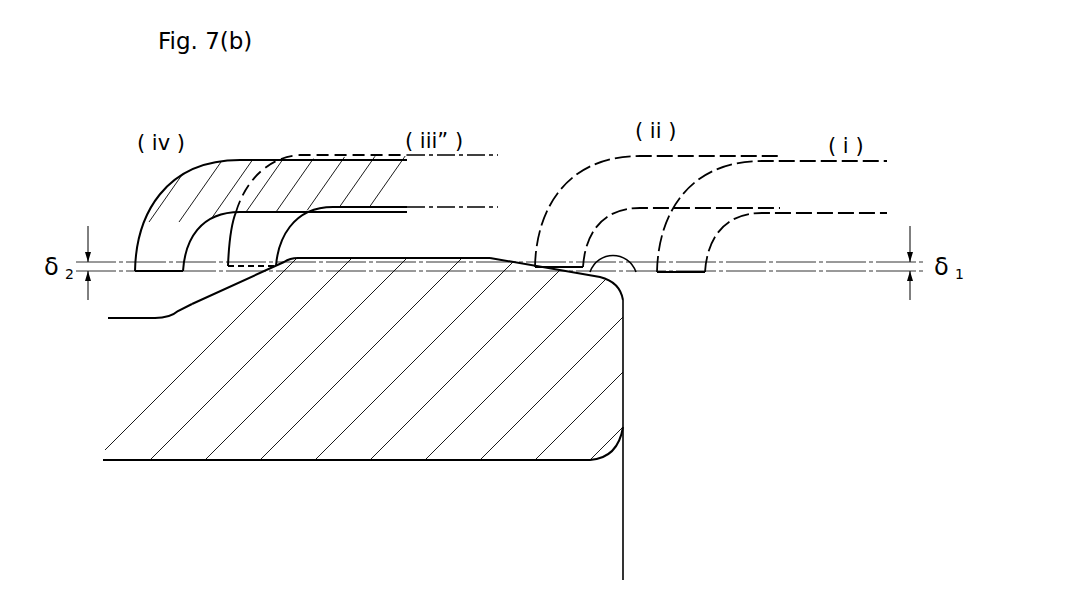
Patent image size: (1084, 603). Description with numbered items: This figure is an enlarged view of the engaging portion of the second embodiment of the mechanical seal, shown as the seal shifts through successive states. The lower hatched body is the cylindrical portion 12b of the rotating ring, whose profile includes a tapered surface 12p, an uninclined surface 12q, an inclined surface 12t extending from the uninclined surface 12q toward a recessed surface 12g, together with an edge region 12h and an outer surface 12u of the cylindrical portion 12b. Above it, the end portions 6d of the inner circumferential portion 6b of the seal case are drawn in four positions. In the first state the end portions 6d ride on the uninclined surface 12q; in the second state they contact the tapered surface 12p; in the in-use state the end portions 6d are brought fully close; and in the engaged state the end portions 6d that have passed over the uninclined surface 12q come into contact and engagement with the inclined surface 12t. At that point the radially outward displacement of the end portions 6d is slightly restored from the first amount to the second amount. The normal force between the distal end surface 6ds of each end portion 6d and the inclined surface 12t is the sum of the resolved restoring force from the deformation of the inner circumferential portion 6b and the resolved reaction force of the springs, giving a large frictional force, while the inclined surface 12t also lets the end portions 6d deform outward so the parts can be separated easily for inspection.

The end portion 6d is at (190, 198).
The inner circumferential portion 6b is at (334, 182).
The distal end surface 6ds is at (156, 277).
The uninclined surface 12q is at (450, 257).
The tapered surface 12p is at (636, 272).
The outer side surface 12u is at (623, 362).
The recessed surface 12g is at (123, 314).
The step corner 12h is at (162, 297).
The inclined surface 12t is at (218, 292).
The cylindrical portion 12b is at (408, 438).